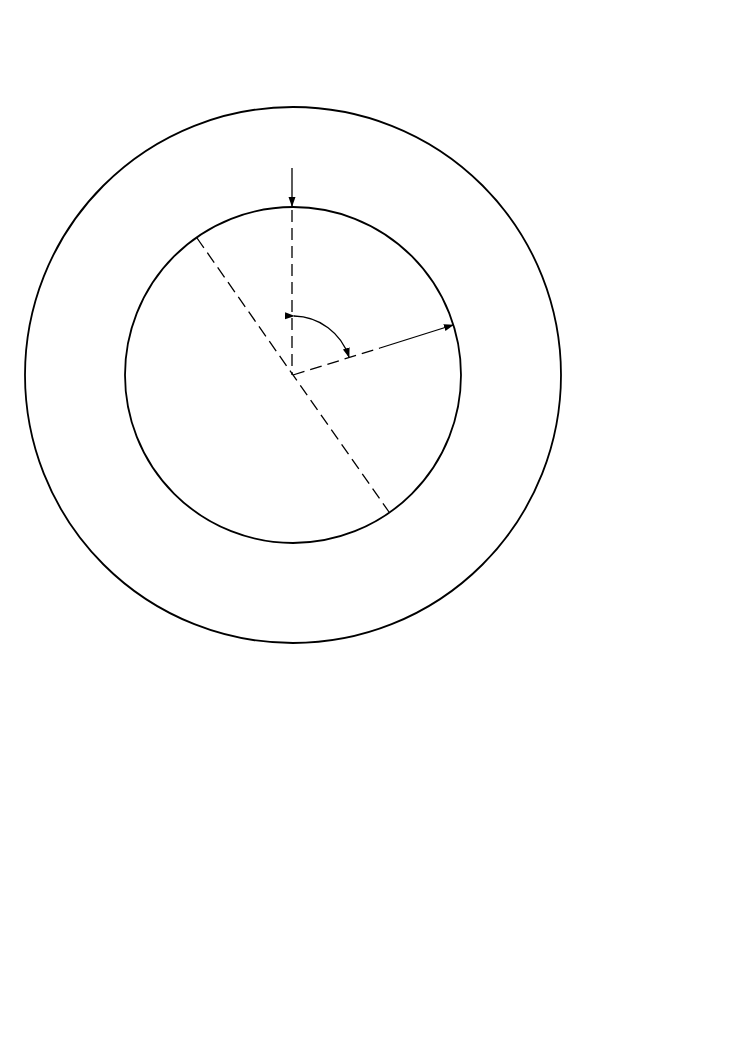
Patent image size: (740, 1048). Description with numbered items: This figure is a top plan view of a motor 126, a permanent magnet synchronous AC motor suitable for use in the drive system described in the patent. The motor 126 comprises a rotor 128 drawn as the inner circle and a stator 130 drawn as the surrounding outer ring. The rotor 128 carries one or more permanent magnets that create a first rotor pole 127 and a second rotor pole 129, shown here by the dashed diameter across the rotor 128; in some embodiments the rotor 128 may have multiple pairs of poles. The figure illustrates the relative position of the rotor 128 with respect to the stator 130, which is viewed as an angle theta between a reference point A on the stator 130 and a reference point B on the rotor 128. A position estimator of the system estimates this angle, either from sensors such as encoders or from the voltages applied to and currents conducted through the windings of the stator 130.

The motor 126 is at (398, 72).
The first rotor pole 127 is at (422, 265).
The rotor 128 is at (460, 393).
The second rotor pole 129 is at (143, 457).
The stator 130 is at (460, 167).